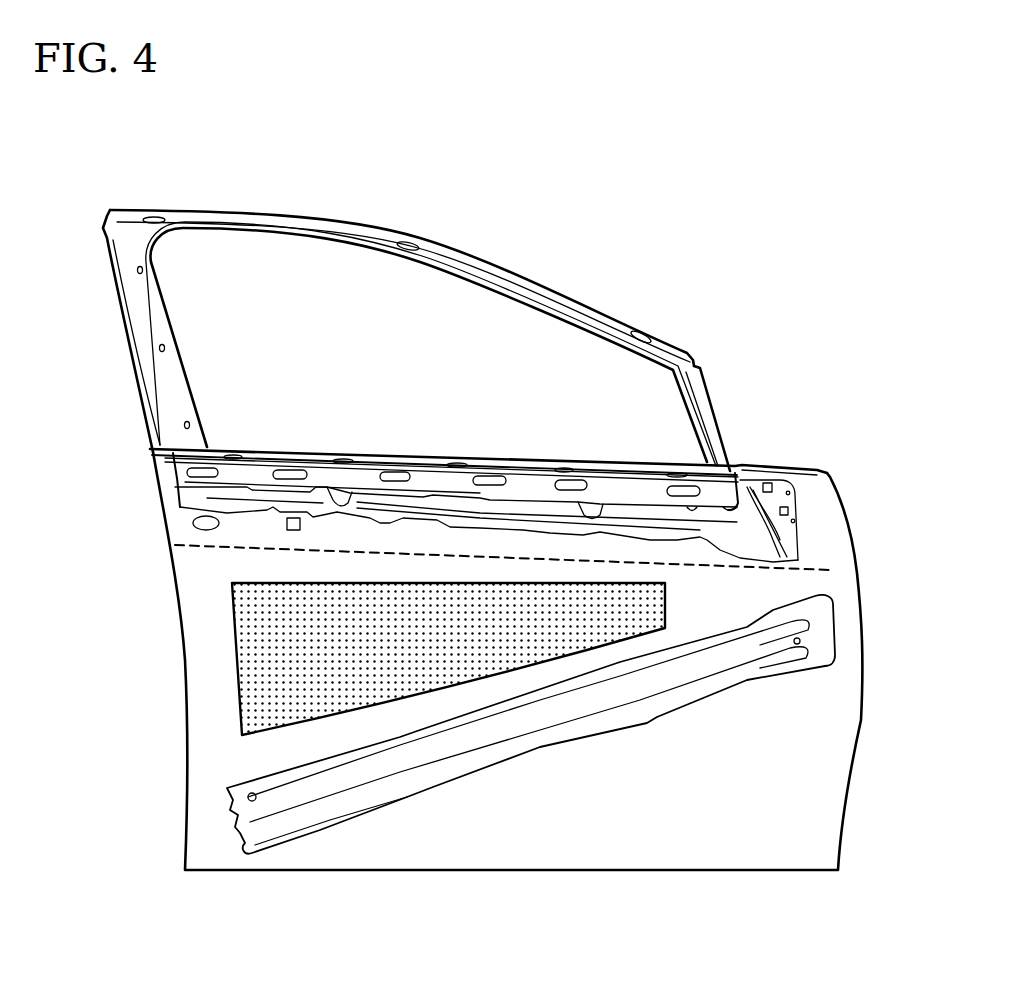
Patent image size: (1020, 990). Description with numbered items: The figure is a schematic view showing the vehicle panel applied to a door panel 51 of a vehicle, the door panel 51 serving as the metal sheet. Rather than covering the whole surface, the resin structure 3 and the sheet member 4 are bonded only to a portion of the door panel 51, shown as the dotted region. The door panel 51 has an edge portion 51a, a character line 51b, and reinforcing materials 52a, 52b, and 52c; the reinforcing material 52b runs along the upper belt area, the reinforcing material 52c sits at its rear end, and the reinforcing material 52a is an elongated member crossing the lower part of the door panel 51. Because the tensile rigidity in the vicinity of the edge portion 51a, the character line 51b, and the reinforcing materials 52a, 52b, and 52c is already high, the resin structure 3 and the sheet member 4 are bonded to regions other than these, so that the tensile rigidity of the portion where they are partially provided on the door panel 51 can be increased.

The resin structure 3 is at (377, 659).
The sheet member 4 is at (232, 660).
The door panel 51 is at (513, 573).
The outer panel 51a is at (174, 577).
The character line 51b is at (827, 568).
The reinforcing material 52a is at (835, 640).
The reinforcing material 52b is at (538, 470).
The reinforcing material 52c is at (795, 493).